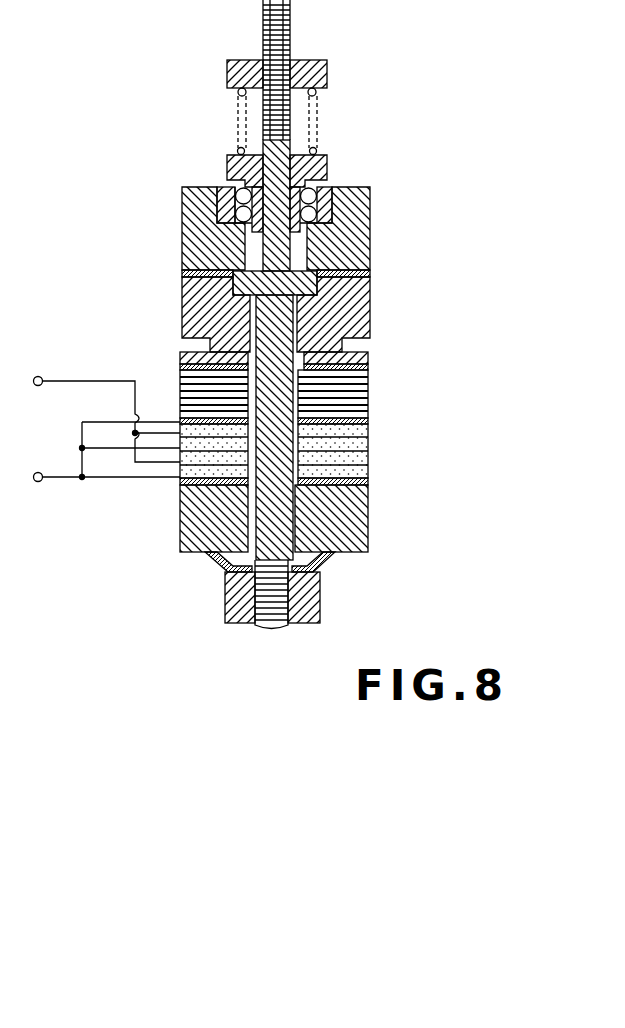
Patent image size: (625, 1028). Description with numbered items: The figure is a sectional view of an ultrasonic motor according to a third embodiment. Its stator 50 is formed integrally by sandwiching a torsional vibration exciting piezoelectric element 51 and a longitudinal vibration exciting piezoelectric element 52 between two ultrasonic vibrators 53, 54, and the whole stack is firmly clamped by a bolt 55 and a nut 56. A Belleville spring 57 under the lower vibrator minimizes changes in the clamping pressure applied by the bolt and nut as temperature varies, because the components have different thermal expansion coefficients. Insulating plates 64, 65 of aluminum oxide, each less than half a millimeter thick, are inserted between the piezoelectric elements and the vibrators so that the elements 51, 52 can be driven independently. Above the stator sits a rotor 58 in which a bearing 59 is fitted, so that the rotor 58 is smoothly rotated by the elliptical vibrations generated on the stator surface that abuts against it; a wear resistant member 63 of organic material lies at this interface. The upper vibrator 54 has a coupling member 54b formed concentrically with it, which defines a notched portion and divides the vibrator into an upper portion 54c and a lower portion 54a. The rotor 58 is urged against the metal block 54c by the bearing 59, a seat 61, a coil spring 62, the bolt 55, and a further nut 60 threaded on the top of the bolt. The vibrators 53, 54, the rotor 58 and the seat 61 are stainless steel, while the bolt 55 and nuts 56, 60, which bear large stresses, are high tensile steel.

The stator 50 is at (432, 610).
The torsional vibration exciting piezoelectric element 51 is at (369, 425).
The longitudinal vibration exciting piezoelectric element 52 is at (369, 368).
The ultrasonic vibrator 53 is at (360, 538).
The ultrasonic vibrator 54 is at (264, 316).
The lower portion of ultrasonic vibrator 54a is at (180, 356).
The coupling member 54b is at (210, 348).
The upper portion of ultrasonic vibrator 54c is at (203, 292).
The bolt 55 is at (270, 320).
The nut 56 is at (232, 607).
The Belleville spring 57 is at (327, 562).
The rotor 58 is at (357, 229).
The bearing 59 is at (332, 190).
The nut 60 is at (312, 72).
The seat 61 is at (325, 158).
The coil spring 62 is at (315, 118).
The wear resistant member 63 is at (357, 269).
The insulating plate 64 is at (370, 422).
The insulating plate 65 is at (370, 359).